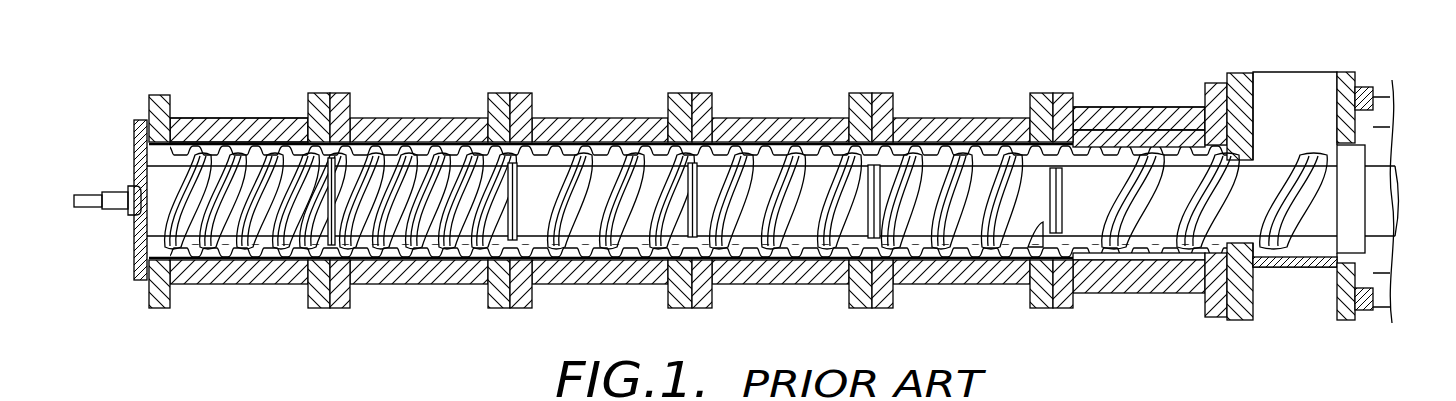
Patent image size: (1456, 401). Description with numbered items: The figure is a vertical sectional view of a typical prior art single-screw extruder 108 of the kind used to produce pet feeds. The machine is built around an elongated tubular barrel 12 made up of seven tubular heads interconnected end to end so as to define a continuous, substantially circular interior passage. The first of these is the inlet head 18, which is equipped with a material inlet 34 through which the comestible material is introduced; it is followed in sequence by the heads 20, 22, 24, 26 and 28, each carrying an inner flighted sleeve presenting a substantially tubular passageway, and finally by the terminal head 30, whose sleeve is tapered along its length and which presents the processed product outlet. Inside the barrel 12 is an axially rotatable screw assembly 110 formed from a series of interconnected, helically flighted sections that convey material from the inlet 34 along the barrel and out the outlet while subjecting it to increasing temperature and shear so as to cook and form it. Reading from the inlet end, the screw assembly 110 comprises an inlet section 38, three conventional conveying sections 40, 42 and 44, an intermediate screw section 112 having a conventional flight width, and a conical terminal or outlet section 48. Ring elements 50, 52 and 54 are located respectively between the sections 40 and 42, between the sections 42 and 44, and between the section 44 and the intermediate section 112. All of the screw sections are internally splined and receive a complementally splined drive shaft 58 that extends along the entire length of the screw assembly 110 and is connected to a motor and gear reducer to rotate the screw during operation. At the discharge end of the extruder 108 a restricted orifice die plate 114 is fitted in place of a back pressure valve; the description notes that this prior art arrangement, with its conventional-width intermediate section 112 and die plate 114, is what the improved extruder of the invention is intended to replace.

The tubular barrel 12 is at (1135, 100).
The inlet head 18 is at (1337, 292).
The tubular head 20 is at (1183, 283).
The tubular head 22 is at (973, 273).
The tubular head 24 is at (783, 277).
The tubular head 26 is at (602, 273).
The tubular head 28 is at (437, 277).
The terminal head 30 is at (230, 273).
The material inlet 34 is at (1317, 78).
The inlet section 38 is at (1260, 190).
The conventional conveying section 40 is at (980, 182).
The conventional conveying section 42 is at (768, 177).
The conventional conveying section 44 is at (602, 180).
The conical terminal section 48 is at (220, 153).
The ring element 50 is at (1057, 212).
The ring element 52 is at (873, 218).
The ring element 54 is at (510, 212).
The drive shaft 58 is at (1382, 208).
The extruder 108 is at (363, 83).
The screw assembly 110 is at (1170, 153).
The intermediate screw section 112 is at (413, 140).
The restricted orifice die plate 114 is at (135, 232).